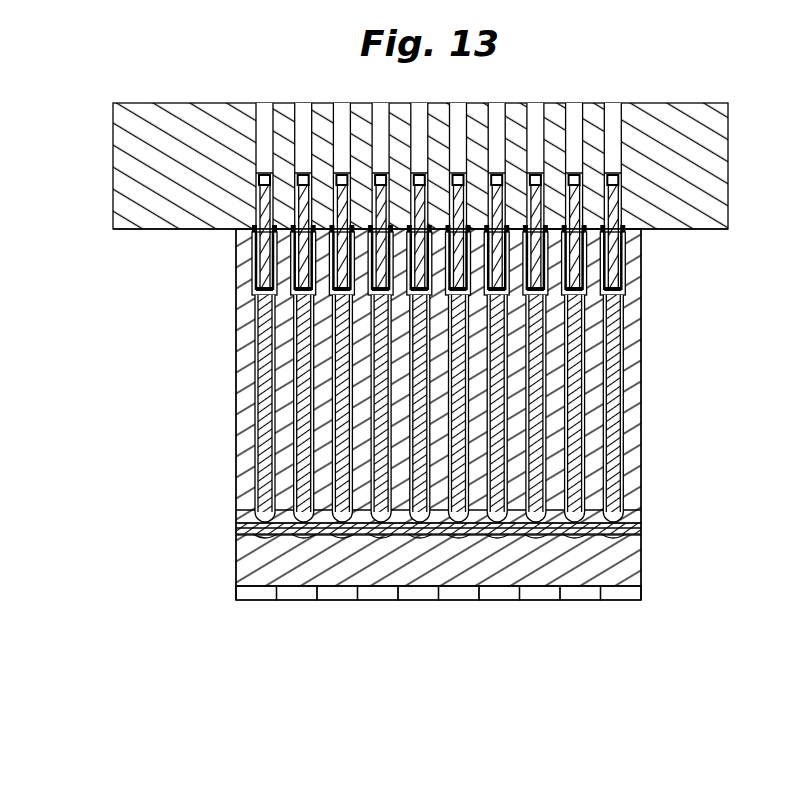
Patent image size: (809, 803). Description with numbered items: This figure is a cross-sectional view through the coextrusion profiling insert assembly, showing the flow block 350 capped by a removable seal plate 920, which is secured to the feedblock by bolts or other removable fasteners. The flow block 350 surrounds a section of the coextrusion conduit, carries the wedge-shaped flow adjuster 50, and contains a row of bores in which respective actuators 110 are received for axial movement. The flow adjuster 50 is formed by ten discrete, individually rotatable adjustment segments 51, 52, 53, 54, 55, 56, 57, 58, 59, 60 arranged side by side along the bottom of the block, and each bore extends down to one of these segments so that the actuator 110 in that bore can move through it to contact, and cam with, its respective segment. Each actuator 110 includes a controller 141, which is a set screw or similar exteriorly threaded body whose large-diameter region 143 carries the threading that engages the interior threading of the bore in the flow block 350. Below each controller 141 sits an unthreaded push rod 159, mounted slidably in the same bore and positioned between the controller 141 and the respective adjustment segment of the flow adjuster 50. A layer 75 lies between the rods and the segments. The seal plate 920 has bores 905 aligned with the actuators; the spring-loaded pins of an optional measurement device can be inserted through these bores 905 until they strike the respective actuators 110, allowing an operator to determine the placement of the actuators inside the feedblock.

The wedge-shaped flow adjuster 50 is at (208, 591).
The adjustment segment 51 is at (257, 593).
The adjustment segment 52 is at (294, 593).
The adjustment segment 53 is at (334, 593).
The adjustment segment 54 is at (367, 593).
The adjustment segment 55 is at (423, 593).
The adjustment segment 56 is at (460, 593).
The adjustment segment 57 is at (498, 593).
The adjustment segment 58 is at (537, 593).
The adjustment segment 59 is at (577, 593).
The adjustment segment 60 is at (623, 593).
The contact layer 75 is at (250, 517).
The actuator 110 is at (262, 320).
The controller 141 is at (265, 197).
The large-diameter region 143 is at (262, 273).
The push rod 159 is at (255, 340).
The flow block 350 is at (628, 448).
The bore 905 is at (265, 112).
The seal plate 920 is at (715, 140).